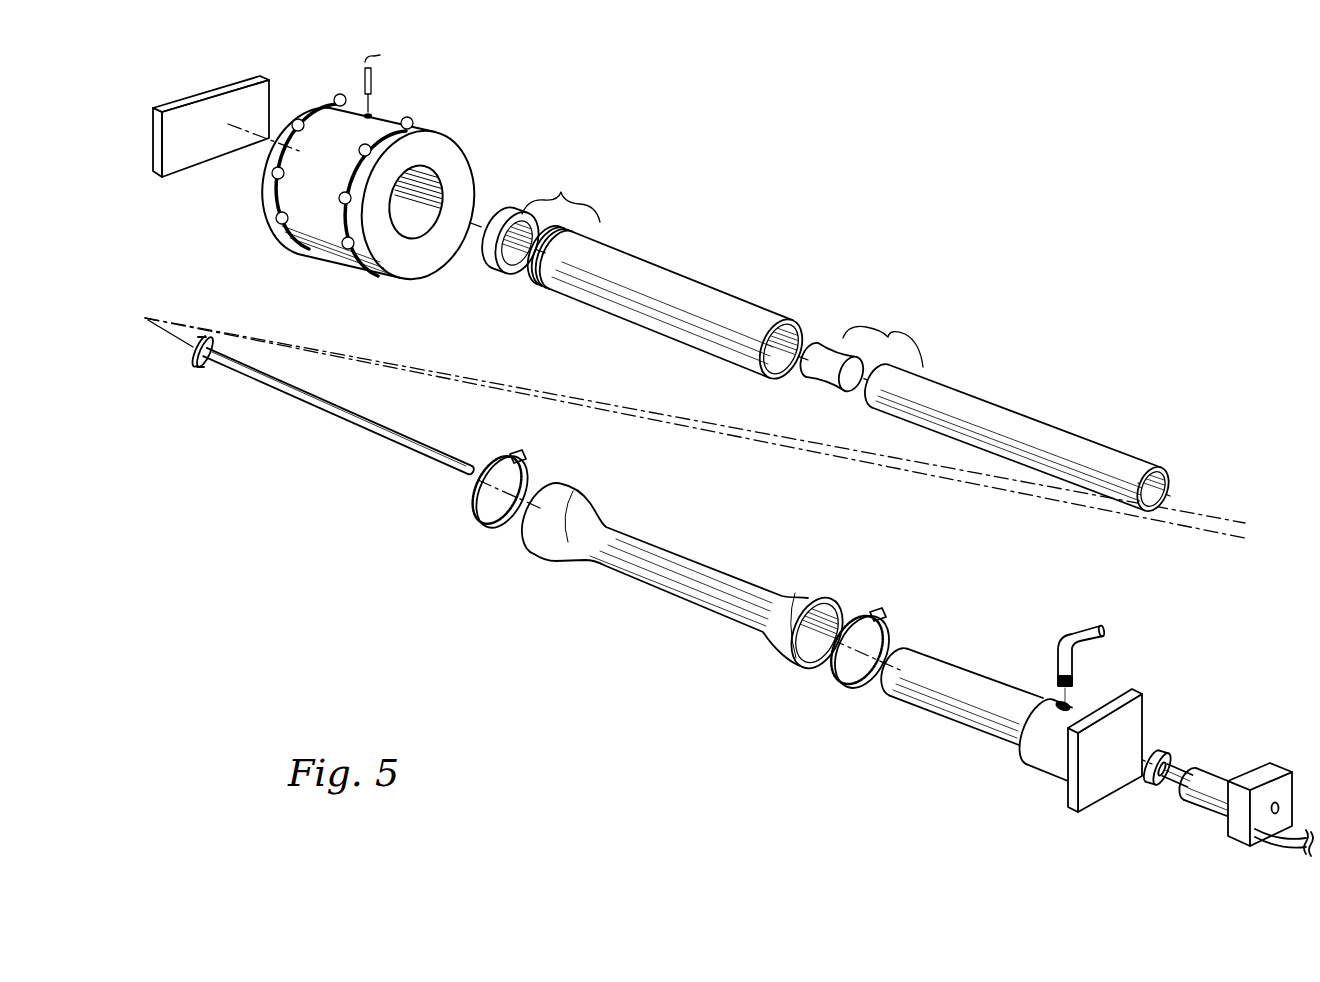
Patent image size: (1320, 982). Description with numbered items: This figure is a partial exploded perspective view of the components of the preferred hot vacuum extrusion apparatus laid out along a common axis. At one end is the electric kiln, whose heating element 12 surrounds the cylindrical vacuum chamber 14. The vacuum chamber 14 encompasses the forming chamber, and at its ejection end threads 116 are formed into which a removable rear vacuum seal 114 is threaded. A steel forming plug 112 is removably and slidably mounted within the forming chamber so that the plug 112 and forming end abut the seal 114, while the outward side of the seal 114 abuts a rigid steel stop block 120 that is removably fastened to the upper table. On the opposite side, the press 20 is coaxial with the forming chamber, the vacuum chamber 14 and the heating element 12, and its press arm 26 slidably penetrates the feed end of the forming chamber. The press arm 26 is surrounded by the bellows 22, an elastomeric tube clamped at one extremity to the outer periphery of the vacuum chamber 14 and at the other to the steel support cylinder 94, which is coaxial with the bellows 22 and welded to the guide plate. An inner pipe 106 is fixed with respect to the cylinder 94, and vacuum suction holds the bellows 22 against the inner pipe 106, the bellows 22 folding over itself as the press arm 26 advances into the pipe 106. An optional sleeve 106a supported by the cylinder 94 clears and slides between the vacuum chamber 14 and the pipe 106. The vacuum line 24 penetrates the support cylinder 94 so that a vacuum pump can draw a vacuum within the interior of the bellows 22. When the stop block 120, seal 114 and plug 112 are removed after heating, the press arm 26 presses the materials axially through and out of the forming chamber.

The heating element 12 is at (332, 140).
The vacuum chamber 14 is at (669, 297).
The press 20 is at (1237, 822).
The bellows 22 is at (668, 565).
The vacuum line 24 is at (1067, 663).
The press arm 26 is at (257, 384).
The steel support cylinder 94 is at (1050, 745).
The inner pipe 106 is at (1005, 426).
The sleeve 106a is at (958, 697).
The forming plug 112 is at (821, 350).
The rear vacuum seal 114 is at (493, 215).
The threads 116 is at (561, 196).
The stop block 120 is at (193, 143).